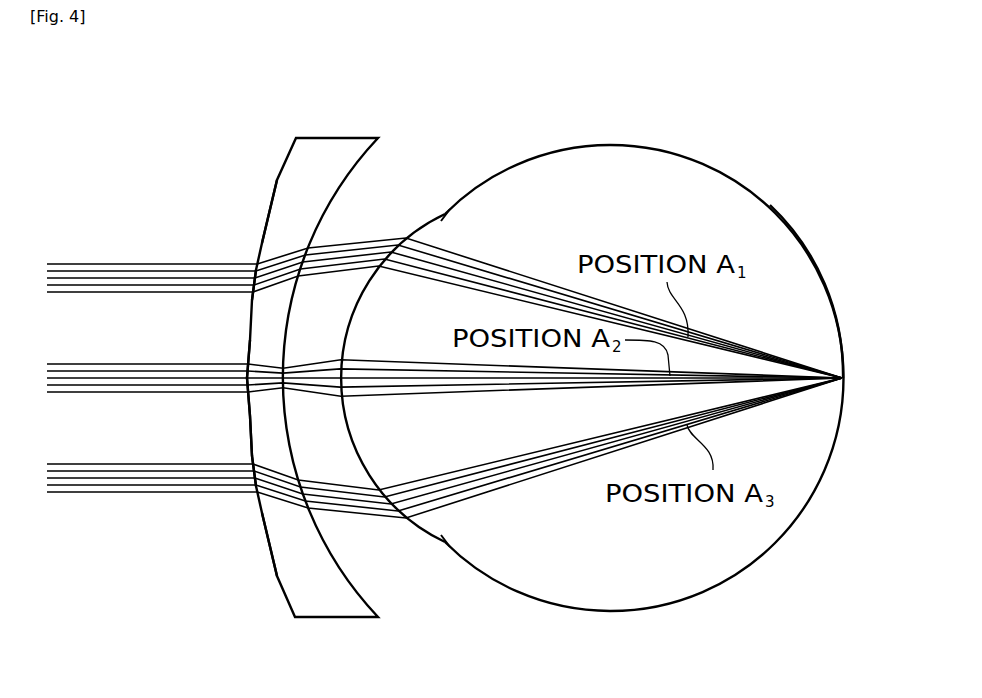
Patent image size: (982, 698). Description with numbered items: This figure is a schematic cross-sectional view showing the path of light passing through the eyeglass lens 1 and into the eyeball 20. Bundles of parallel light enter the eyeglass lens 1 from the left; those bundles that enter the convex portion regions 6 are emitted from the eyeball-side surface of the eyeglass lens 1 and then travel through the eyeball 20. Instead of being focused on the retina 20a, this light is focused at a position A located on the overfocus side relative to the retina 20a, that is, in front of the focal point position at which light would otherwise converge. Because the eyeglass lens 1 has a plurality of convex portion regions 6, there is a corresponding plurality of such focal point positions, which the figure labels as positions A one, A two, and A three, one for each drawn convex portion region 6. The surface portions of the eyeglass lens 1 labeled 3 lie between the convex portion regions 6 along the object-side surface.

The eyeglass lens 1 is at (373, 121).
The lens surface portion 3 is at (262, 243).
The convex portion regions 6 is at (256, 287).
The eyeball 20 is at (764, 123).
The retina 20a is at (803, 231).